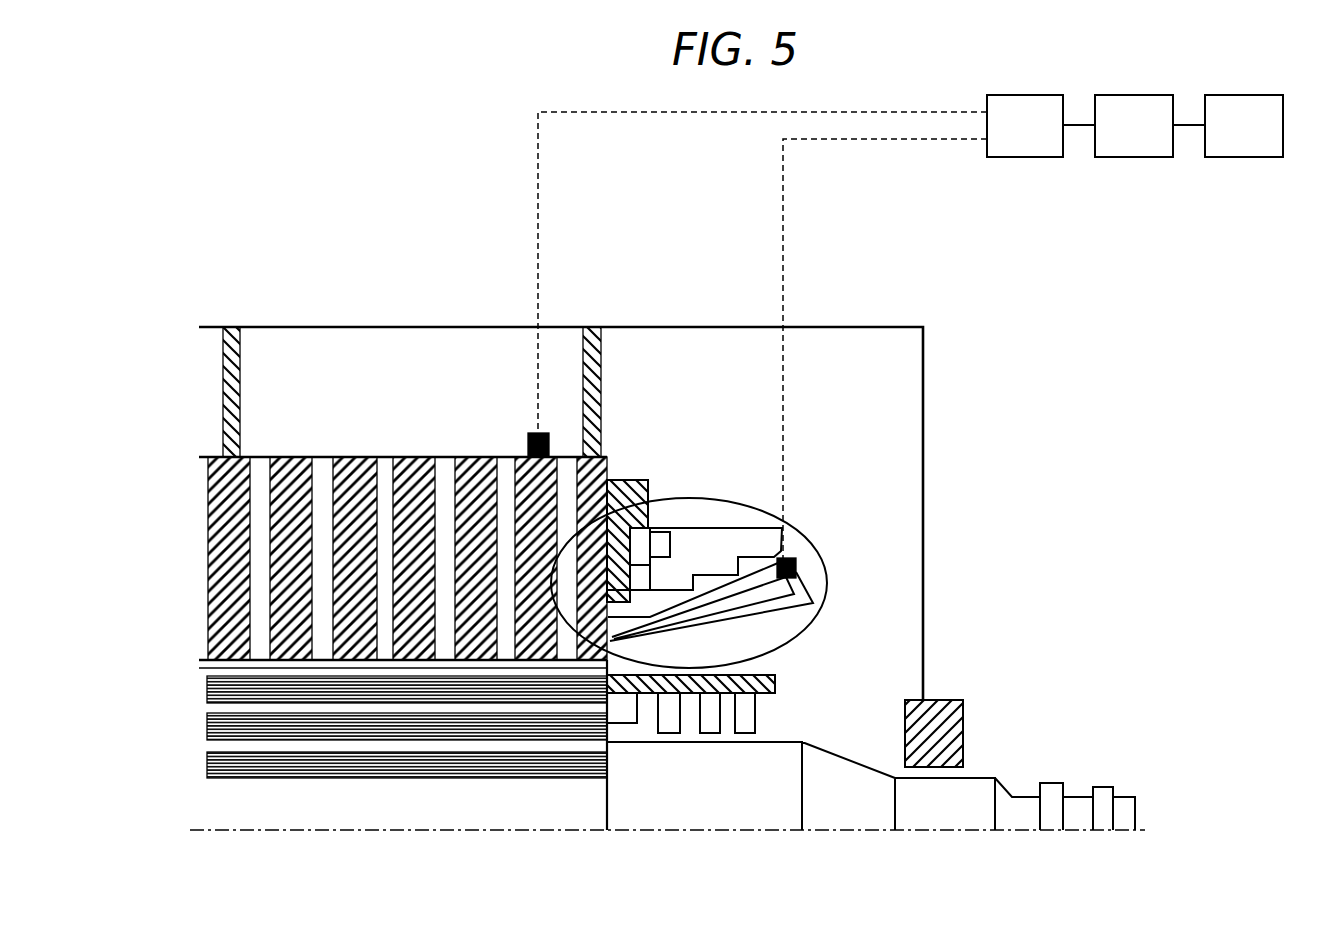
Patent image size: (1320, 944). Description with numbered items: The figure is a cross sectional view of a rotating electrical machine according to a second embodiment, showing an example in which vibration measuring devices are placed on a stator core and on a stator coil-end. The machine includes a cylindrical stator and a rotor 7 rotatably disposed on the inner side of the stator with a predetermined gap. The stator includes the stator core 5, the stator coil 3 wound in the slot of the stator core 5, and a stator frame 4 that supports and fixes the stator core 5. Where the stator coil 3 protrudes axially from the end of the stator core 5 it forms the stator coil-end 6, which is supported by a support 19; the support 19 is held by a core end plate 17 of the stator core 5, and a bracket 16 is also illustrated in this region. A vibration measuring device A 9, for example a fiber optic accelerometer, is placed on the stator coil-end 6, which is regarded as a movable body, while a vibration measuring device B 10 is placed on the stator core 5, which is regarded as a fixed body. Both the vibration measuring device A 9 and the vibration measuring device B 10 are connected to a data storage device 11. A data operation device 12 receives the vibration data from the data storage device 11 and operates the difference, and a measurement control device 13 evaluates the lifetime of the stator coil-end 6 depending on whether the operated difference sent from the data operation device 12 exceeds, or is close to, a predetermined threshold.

The stator coil 3 is at (732, 623).
The stator frame 4 is at (684, 327).
The stator core 5 is at (296, 456).
The stator coil-end 6 is at (810, 636).
The rotor 7 is at (638, 800).
The vibration measuring device A 9 is at (796, 560).
The vibration measuring device B 10 is at (530, 440).
The data storage device 11 is at (1025, 157).
The data operation device 12 is at (1135, 157).
The measurement control device 13 is at (1245, 157).
The bracket 16 is at (658, 545).
The core end plate 17 is at (621, 479).
The support 19 is at (710, 550).